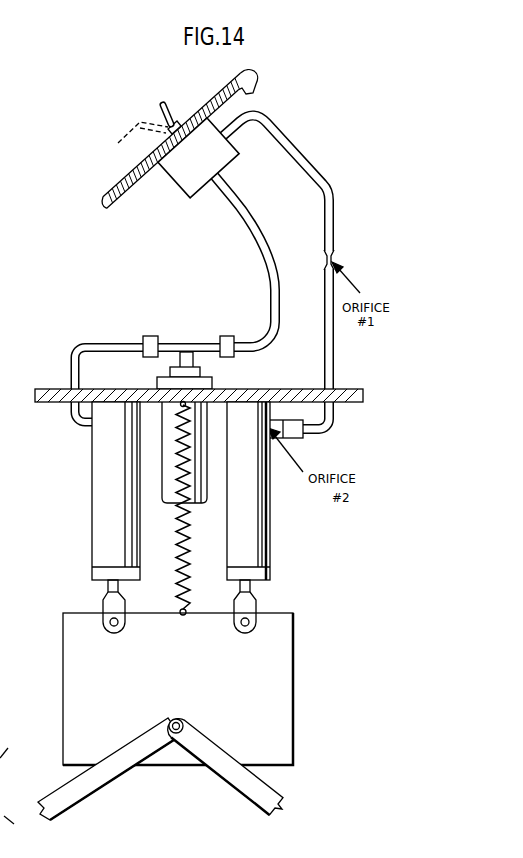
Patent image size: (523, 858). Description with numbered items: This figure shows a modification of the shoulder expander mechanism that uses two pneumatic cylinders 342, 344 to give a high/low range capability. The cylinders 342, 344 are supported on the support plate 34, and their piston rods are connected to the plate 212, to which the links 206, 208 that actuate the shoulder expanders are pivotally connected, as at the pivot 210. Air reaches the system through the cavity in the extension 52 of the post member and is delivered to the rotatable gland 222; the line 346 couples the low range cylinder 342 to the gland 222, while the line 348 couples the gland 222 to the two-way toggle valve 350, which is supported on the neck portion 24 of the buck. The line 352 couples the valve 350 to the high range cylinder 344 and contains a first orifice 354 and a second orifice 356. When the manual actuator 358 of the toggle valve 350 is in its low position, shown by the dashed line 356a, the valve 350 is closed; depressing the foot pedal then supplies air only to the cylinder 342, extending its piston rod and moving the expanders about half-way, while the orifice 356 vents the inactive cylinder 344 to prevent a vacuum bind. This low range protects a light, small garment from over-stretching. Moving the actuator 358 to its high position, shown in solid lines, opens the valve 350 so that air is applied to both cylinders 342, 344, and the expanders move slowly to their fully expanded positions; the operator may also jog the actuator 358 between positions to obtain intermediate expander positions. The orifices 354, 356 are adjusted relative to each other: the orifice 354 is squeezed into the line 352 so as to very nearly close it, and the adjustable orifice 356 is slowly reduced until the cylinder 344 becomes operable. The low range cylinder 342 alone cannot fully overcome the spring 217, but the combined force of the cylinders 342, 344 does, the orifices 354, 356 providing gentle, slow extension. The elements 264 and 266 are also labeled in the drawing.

The neck portion 24 is at (208, 107).
The support plate 34 is at (353, 391).
The extension 52 is at (190, 503).
The link 206 is at (95, 787).
The link 208 is at (278, 793).
The pivotal connection 210 is at (179, 722).
The plate 212 is at (287, 686).
The spring 217 is at (185, 580).
The rotatable gland 222 is at (203, 370).
The arm 264 is at (23, 826).
The arm 266 is at (13, 744).
The pneumatic cylinder 342 is at (107, 503).
The pneumatic cylinder 344 is at (263, 517).
The line 346 is at (80, 338).
The line 348 is at (241, 236).
The two-way toggle valve 350 is at (178, 182).
The line 352 is at (312, 178).
The first orifice 354 is at (336, 254).
The second orifice 356 is at (298, 446).
The low position of manual actuator 356a is at (128, 142).
The manual actuator 358 is at (165, 104).